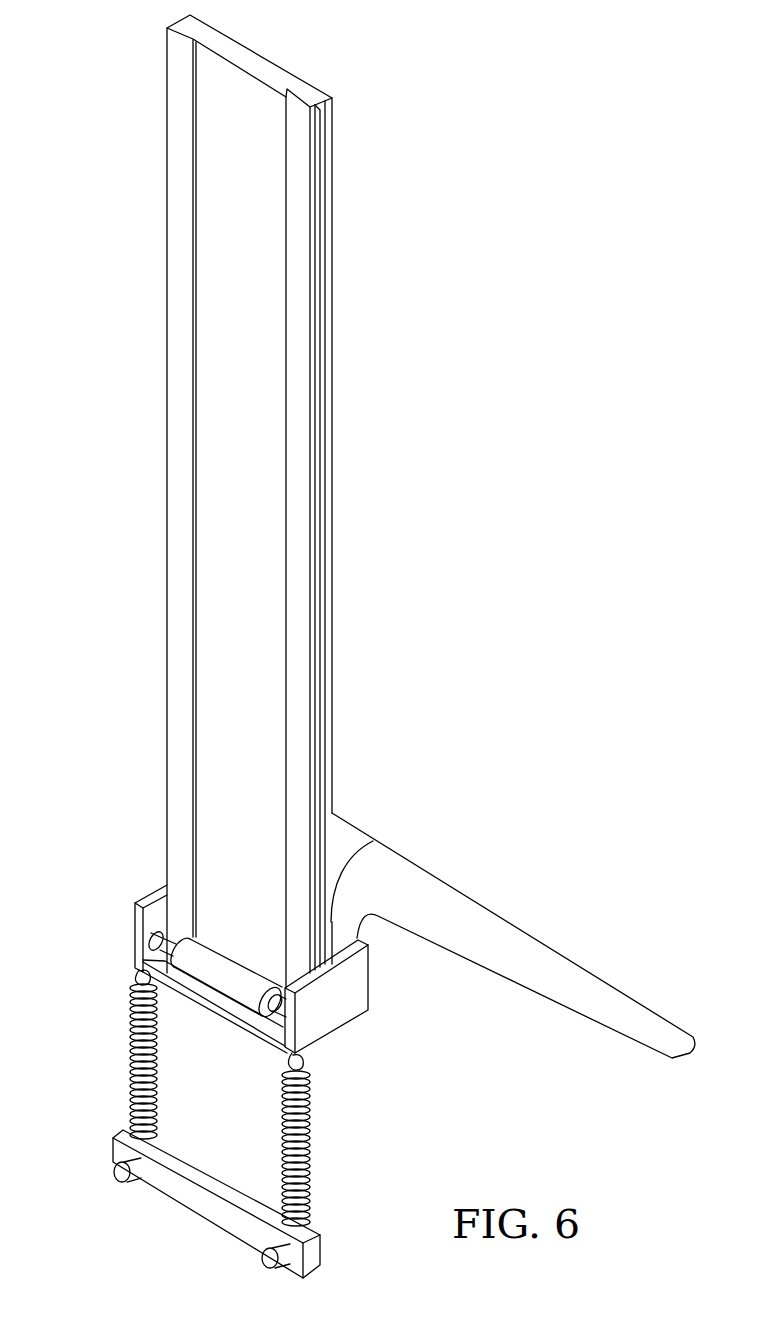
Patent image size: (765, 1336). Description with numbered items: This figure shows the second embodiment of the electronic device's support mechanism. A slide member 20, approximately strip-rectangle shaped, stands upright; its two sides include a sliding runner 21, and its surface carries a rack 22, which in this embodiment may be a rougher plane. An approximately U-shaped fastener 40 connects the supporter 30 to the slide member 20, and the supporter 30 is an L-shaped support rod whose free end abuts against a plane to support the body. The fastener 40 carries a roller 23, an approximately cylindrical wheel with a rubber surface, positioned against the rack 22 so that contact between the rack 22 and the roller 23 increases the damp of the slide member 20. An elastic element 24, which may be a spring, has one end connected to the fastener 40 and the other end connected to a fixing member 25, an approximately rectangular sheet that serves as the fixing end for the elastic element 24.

The slide member 20 is at (259, 54).
The sliding runner 21 is at (318, 165).
The rack 22 is at (215, 284).
The roller 23 is at (223, 967).
The elastic element 24 is at (280, 1130).
The fixing member 25 is at (190, 1198).
The supporter 30 is at (532, 957).
The fastener 40 is at (336, 1012).